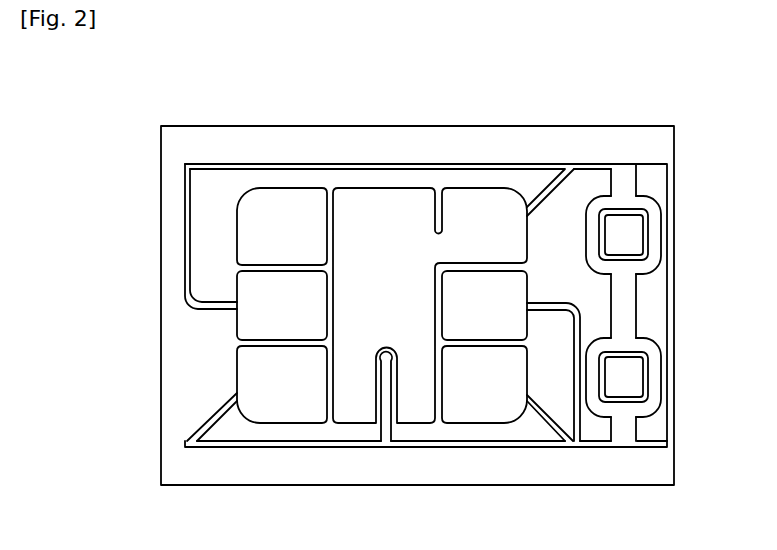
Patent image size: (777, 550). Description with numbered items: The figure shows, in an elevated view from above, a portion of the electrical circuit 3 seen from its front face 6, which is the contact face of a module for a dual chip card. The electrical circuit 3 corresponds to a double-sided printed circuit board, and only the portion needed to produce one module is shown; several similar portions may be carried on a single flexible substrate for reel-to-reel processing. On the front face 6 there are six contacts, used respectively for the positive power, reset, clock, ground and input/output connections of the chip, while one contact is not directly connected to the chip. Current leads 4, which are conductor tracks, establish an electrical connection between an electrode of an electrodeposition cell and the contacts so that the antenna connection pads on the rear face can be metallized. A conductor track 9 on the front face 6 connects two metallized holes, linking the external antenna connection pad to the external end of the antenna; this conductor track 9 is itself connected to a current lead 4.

The electrical circuit 3 is at (652, 148).
The current leads 4 is at (622, 187).
The front face 6 is at (379, 157).
The conductor track 9 is at (387, 393).